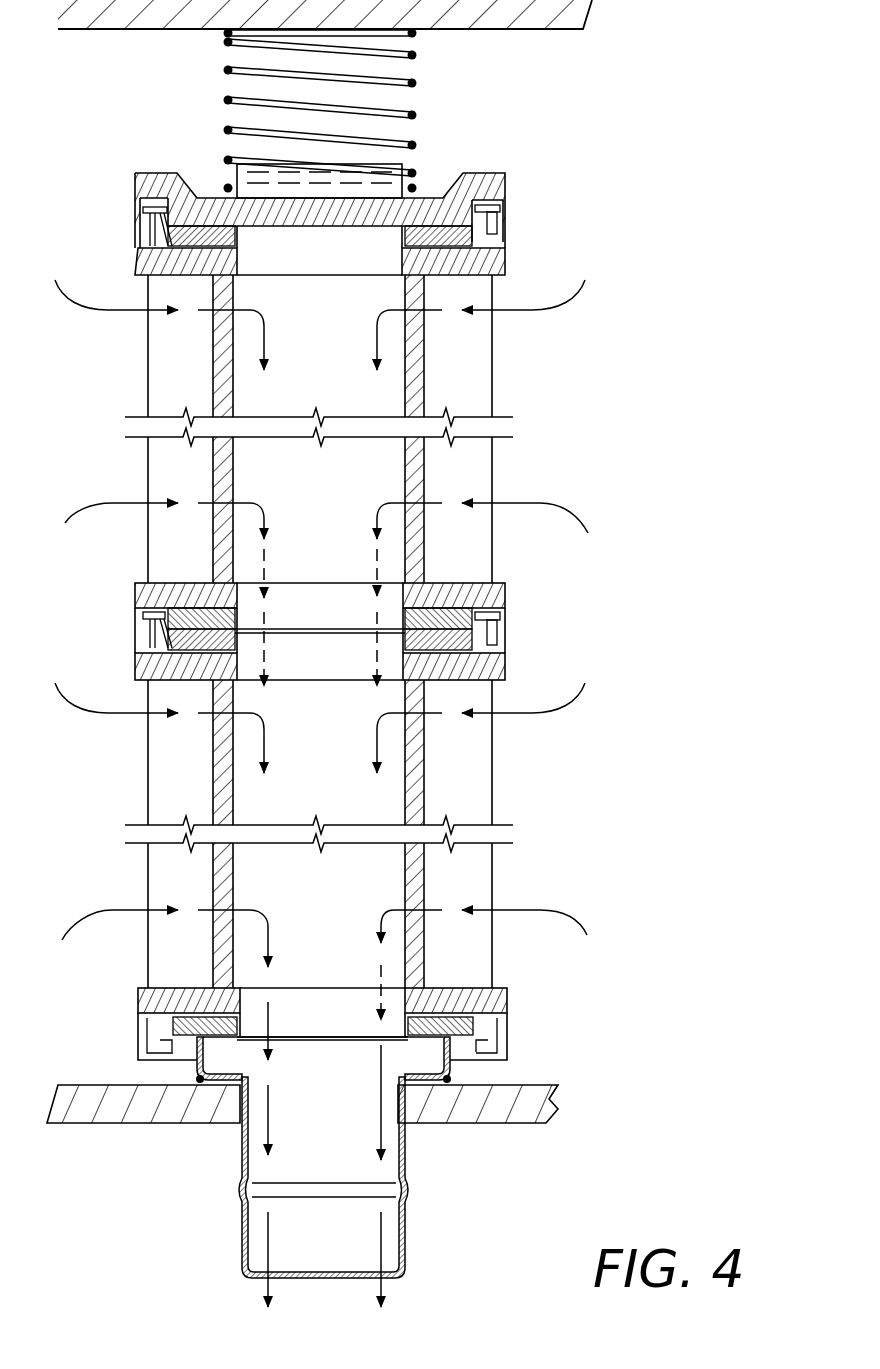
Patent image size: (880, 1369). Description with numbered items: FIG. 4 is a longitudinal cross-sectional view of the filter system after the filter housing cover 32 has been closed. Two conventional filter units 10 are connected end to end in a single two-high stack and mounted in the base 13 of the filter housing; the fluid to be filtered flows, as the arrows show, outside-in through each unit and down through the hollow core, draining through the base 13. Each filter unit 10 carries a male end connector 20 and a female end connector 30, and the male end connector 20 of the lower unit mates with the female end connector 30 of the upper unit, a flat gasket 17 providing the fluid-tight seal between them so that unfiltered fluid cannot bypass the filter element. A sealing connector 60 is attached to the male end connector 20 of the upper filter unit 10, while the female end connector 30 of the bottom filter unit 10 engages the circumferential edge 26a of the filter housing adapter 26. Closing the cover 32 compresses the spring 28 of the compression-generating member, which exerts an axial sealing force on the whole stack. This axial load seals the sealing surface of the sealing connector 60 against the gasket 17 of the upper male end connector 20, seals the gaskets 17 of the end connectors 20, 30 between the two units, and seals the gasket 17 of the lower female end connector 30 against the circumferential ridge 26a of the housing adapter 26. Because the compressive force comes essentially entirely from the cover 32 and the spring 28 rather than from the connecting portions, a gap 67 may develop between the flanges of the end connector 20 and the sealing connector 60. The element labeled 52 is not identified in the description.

The filter unit 10 is at (492, 397).
The base 13 is at (540, 1123).
The flat gasket 17 is at (472, 230).
The male end connector 20 is at (505, 262).
The filter housing adapter 26 is at (405, 1165).
The circumferential edge 26a is at (473, 1040).
The spring 28 is at (227, 100).
The female end connector 30 is at (507, 594).
The cover 32 is at (577, 32).
The spring seat 52 is at (157, 172).
The sealing connector 60 is at (505, 188).
The gap 67 is at (138, 222).